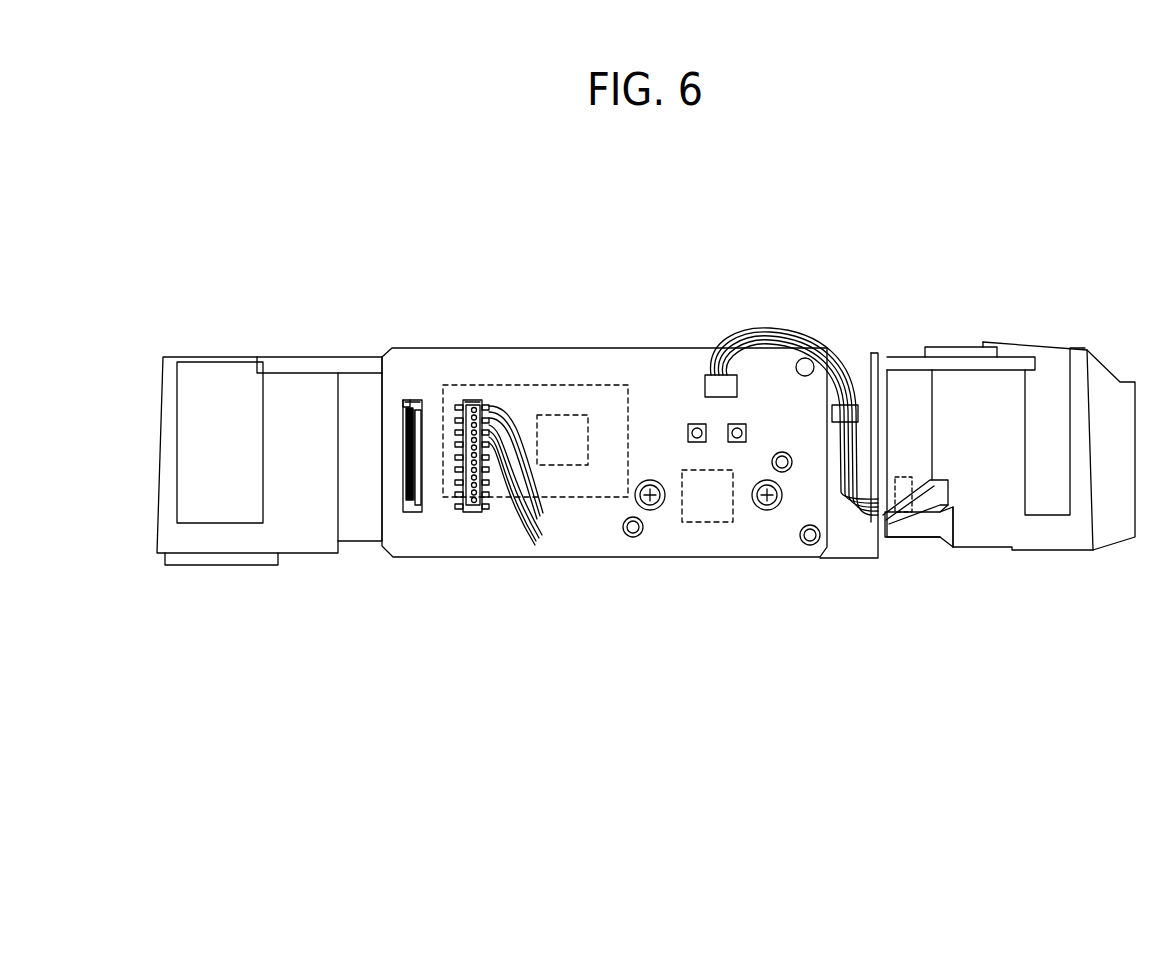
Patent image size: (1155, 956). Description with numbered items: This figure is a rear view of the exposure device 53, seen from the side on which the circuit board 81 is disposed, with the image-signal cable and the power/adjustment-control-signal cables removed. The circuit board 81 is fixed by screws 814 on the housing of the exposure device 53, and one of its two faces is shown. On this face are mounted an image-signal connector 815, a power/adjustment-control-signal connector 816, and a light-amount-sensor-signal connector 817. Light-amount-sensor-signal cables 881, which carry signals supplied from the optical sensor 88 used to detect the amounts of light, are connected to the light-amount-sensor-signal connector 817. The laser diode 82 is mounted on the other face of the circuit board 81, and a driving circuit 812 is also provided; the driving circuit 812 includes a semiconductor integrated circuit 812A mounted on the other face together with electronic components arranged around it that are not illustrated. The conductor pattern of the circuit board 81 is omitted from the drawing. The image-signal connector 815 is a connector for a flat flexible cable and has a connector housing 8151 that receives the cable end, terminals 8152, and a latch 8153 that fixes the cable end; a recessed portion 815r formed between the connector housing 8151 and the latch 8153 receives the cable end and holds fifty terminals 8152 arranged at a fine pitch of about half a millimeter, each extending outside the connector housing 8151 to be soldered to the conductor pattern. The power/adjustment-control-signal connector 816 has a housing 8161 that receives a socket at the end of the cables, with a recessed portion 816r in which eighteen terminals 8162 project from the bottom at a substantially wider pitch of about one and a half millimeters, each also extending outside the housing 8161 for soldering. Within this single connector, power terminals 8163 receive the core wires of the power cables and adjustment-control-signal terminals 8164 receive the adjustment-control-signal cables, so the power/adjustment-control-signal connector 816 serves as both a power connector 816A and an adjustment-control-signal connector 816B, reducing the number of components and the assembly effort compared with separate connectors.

The exposure device 53 is at (390, 275).
The circuit board 81 is at (418, 348).
The driving circuit 812 is at (513, 385).
The semiconductor integrated circuit 812A is at (562, 415).
The screws 814 is at (650, 510).
The image-signal connector 815 is at (412, 522).
The connector housing 8151 is at (410, 400).
The recessed portion 815r is at (410, 398).
The terminals 8152 is at (410, 462).
The latch 8153 is at (415, 488).
The power/adjustment-control-signal connector 816 is at (473, 522).
The housing 8161 is at (464, 512).
The recessed portion 816r is at (470, 398).
The power connector 816A is at (450, 410).
The adjustment-control-signal connector 816B is at (447, 448).
The terminals 8162 is at (613, 548).
The power terminals 8163 is at (598, 505).
The adjustment-control-signal terminals 8164 is at (598, 529).
The light-amount-sensor-signal connector 817 is at (705, 385).
The light-amount-sensor-signal cables 881 is at (786, 332).
The optical sensor 88 is at (908, 477).
The laser diode 82 is at (712, 522).